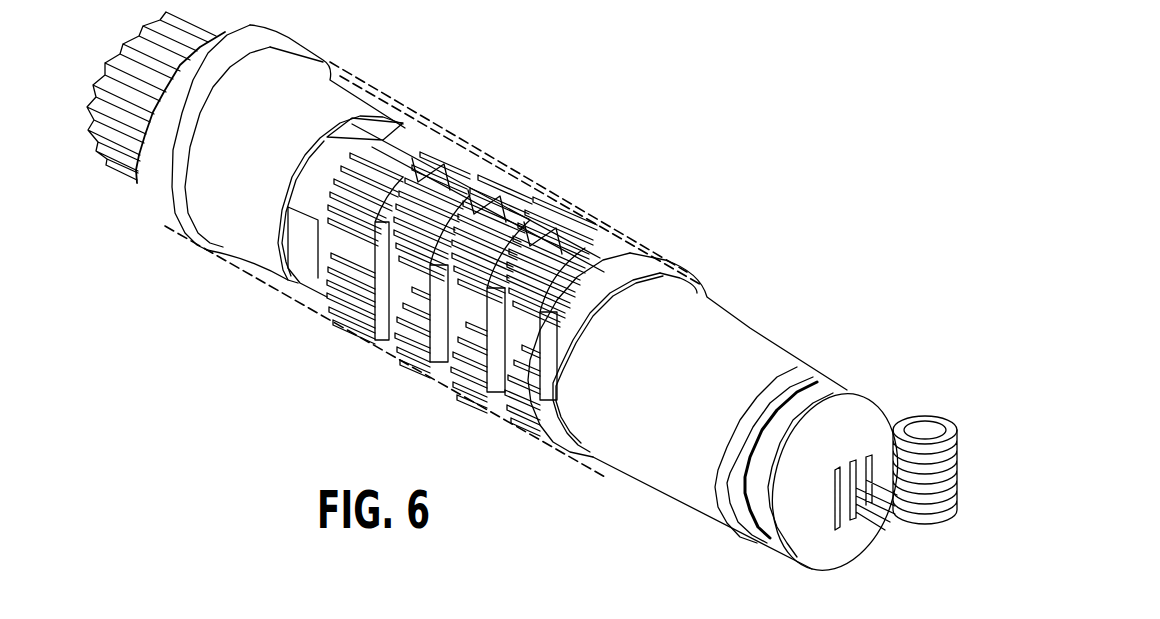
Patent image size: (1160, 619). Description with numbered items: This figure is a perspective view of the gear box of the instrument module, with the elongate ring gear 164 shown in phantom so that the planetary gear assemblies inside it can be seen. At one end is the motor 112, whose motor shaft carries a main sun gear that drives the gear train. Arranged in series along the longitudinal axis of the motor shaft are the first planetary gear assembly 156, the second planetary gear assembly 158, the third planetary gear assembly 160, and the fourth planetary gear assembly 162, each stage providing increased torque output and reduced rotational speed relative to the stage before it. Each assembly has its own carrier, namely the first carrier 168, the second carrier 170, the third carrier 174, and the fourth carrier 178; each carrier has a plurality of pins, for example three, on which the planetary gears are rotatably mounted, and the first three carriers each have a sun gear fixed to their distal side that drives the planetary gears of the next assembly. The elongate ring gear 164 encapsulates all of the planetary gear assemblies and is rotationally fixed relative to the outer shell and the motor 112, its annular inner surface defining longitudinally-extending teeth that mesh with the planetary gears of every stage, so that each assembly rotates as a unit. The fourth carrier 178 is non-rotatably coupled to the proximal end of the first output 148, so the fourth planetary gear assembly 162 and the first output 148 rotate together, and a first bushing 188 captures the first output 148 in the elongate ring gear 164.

The motor 112 is at (803, 352).
The first output 148 is at (114, 159).
The first planetary gear assembly 156 is at (508, 430).
The second planetary gear assembly 158 is at (463, 397).
The third planetary gear assembly 160 is at (405, 371).
The fourth planetary gear assembly 162 is at (335, 326).
The elongate ring gear 164 is at (628, 228).
The first carrier 168 is at (562, 255).
The second carrier 170 is at (518, 223).
The third carrier 174 is at (470, 192).
The fourth carrier 178 is at (405, 138).
The first bushing 188 is at (293, 43).